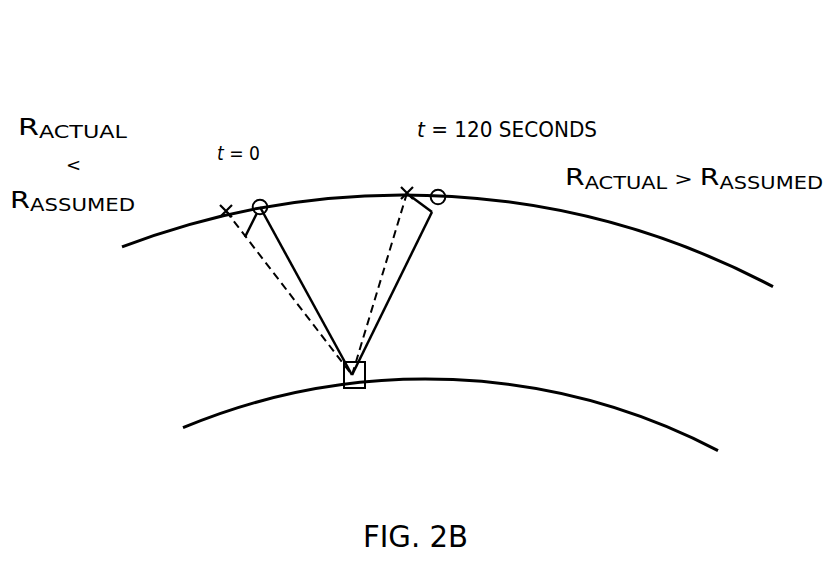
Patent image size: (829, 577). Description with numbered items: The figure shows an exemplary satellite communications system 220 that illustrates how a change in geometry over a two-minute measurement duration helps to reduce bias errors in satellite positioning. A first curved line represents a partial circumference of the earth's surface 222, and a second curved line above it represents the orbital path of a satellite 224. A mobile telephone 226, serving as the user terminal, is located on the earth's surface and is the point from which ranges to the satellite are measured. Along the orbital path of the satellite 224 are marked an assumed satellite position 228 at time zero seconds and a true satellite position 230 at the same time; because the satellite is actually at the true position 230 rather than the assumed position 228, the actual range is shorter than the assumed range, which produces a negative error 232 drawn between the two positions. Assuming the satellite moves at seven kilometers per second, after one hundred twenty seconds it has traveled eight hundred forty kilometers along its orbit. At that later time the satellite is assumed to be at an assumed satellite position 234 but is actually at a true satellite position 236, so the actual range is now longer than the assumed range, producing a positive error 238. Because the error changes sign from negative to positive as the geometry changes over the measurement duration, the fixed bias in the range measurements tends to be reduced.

The satellite communications system 220 is at (684, 62).
The earth's surface 222 is at (653, 421).
The orbital path of a satellite 224 is at (718, 259).
The mobile telephone 226 is at (354, 388).
The assumed satellite position at time t=0 seconds 228 is at (223, 205).
The true satellite position at time t=0 seconds 230 is at (264, 200).
The error at time t=0 seconds 232 is at (233, 224).
The assumed satellite position at time t=120 seconds 234 is at (404, 189).
The true satellite position at time t=120 seconds 236 is at (442, 190).
The error at time t=120 seconds 238 is at (452, 204).